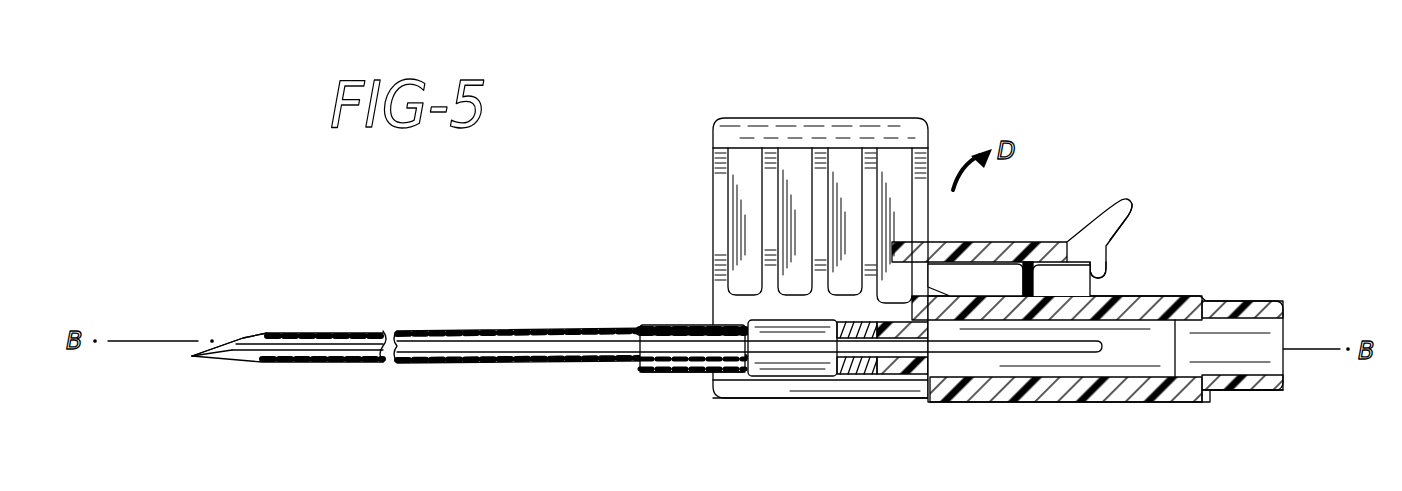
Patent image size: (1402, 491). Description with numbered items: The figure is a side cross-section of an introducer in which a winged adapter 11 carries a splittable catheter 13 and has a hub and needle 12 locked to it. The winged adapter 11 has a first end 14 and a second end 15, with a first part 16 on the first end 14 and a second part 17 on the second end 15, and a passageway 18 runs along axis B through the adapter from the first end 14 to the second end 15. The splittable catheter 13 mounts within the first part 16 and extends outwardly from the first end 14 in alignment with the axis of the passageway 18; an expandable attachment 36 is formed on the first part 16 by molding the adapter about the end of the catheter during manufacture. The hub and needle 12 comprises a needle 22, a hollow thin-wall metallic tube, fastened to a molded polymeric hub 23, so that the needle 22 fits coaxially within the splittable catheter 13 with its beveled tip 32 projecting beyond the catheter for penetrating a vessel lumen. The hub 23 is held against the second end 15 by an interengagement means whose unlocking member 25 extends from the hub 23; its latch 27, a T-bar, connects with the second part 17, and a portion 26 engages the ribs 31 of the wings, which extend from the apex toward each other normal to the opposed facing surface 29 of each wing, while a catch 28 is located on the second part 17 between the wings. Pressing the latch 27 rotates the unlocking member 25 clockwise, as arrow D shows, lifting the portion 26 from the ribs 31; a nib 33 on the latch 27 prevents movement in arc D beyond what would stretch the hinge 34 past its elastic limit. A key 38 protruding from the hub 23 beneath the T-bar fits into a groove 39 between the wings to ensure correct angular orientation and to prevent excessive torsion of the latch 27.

The winged adapter 11 is at (930, 127).
The hub and needle 12 is at (1083, 403).
The splittable catheter 13 is at (478, 365).
The first end 14 is at (643, 367).
The second end 15 is at (928, 402).
The first part 16 is at (678, 373).
The second part 17 is at (888, 378).
The passageway 18 is at (798, 363).
The needle 22 is at (243, 338).
The hub 23 is at (1180, 403).
The unlocking member 25 is at (1020, 237).
The portion 26 is at (893, 190).
The latch 27 is at (1135, 192).
The catch 28 is at (910, 177).
The opposed facing surface 29 is at (748, 198).
The ribs 31 is at (868, 167).
The beveled tip 32 is at (203, 358).
The nib 33 is at (1138, 218).
The hinge 34 is at (1113, 282).
The expandable attachment 36 is at (687, 327).
The key 38 is at (972, 258).
The groove 39 is at (900, 310).